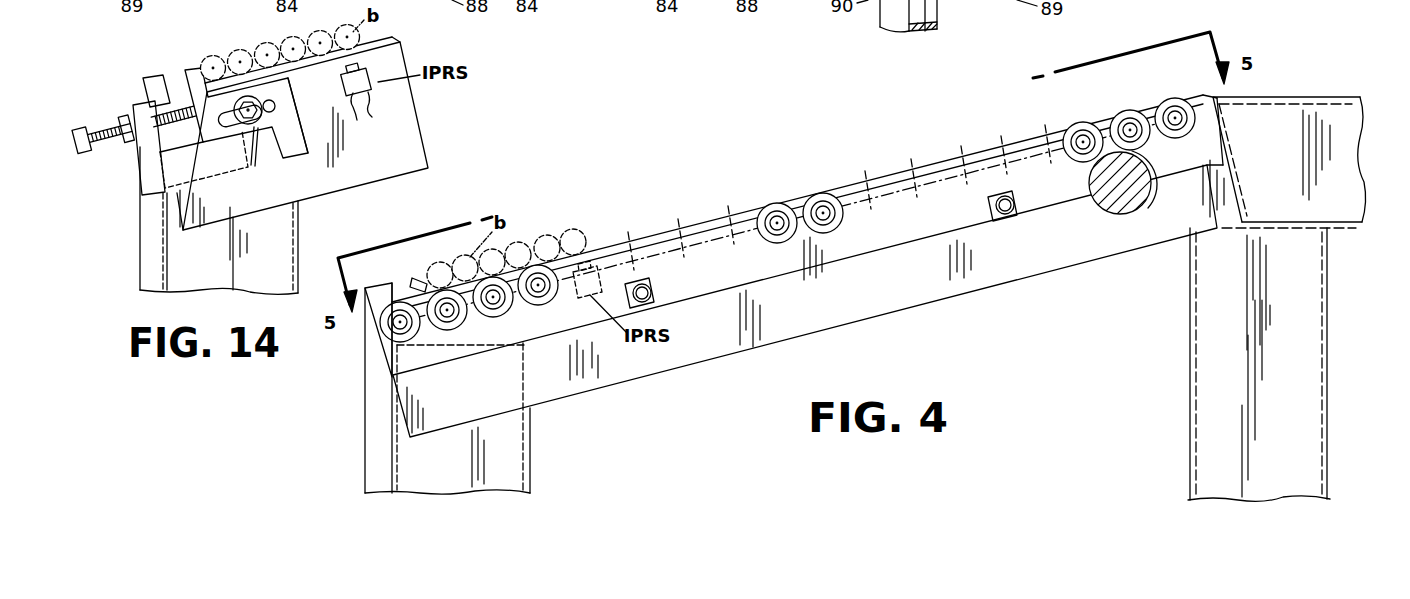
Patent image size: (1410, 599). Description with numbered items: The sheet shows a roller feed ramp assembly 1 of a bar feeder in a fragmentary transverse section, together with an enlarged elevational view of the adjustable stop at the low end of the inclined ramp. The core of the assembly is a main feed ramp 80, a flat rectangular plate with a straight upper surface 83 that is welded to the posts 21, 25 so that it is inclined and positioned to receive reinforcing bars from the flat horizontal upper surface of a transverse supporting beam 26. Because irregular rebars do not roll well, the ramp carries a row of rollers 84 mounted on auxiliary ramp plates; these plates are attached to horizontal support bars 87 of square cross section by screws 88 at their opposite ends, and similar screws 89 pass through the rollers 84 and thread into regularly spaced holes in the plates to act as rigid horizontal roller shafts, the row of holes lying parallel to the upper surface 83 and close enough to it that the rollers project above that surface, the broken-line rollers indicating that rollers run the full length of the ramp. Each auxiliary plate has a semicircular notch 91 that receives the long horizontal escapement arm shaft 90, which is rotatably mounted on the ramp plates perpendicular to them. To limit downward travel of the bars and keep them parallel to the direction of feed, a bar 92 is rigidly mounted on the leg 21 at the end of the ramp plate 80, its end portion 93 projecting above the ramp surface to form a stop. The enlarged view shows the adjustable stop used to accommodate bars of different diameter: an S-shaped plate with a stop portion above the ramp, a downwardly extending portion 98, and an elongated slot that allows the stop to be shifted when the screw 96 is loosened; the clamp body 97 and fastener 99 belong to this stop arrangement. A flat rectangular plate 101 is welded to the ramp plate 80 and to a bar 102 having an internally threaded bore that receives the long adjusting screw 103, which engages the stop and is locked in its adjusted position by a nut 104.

In FIG. 4, the roller feed ramp assembly 1 is at (936, 150).
In FIG. 14, the post 21 is at (177, 277).
In FIG. 4, the post 21 is at (533, 440).
In FIG. 4, the post 25 is at (1203, 378).
In FIG. 4, the transverse supporting beam 26 is at (1273, 98).
In FIG. 14, the main feed ramp 80 is at (380, 49).
In FIG. 4, the main feed ramp 80 is at (993, 281).
In FIG. 4, the upper surface 83 is at (694, 230).
In FIG. 4, the rollers 84 is at (422, 296).
In FIG. 4, the horizontal support bar 87 is at (655, 283).
In FIG. 4, the screw 88 is at (653, 302).
In FIG. 4, the screw 89 is at (538, 285).
In FIG. 4, the escapement arm shaft 90 is at (1114, 206).
In FIG. 4, the semicircular notch 91 is at (1150, 190).
In FIG. 14, the bar 92 is at (148, 247).
In FIG. 4, the bar 92 is at (380, 408).
In FIG. 14, the end portion 93 is at (160, 78).
In FIG. 4, the end portion 93 is at (378, 300).
In FIG. 14, the screw 96 is at (253, 157).
In FIG. 14, the clamp post 97 is at (196, 67).
In FIG. 14, the downwardly extending portion 98 is at (292, 148).
In FIG. 14, the bolt 99 is at (266, 105).
In FIG. 14, the flat rectangular plate 101 is at (197, 183).
In FIG. 14, the bar 102 is at (152, 167).
In FIG. 14, the screw 103 is at (110, 124).
In FIG. 14, the nut 104 is at (128, 110).